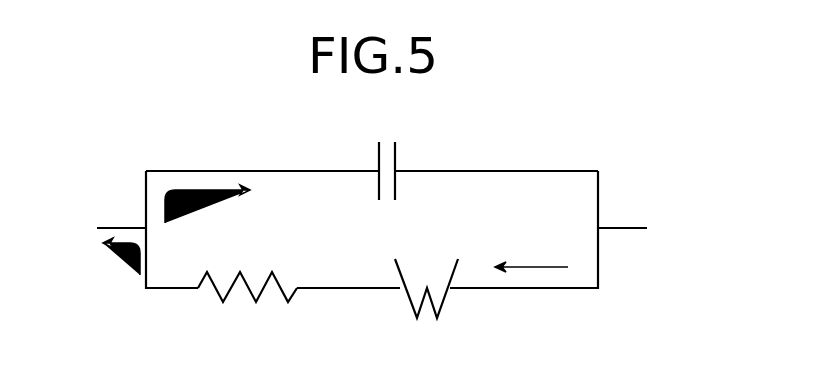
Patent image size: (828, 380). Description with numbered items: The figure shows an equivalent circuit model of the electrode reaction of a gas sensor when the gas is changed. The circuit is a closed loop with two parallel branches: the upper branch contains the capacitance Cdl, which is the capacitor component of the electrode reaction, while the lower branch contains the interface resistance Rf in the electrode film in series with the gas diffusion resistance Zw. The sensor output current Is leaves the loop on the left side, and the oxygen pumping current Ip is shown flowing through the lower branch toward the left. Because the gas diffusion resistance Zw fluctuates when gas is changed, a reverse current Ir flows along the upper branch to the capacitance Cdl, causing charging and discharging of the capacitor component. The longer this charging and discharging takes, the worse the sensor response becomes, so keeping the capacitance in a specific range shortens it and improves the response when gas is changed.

The capacitance Cdl is at (383, 157).
The interface resistance Rf is at (247, 272).
The gas diffusion resistance Zw is at (426, 271).
The reverse current Ir is at (207, 185).
The sensor output current Is is at (118, 238).
The oxygen pumping current Ip is at (531, 254).